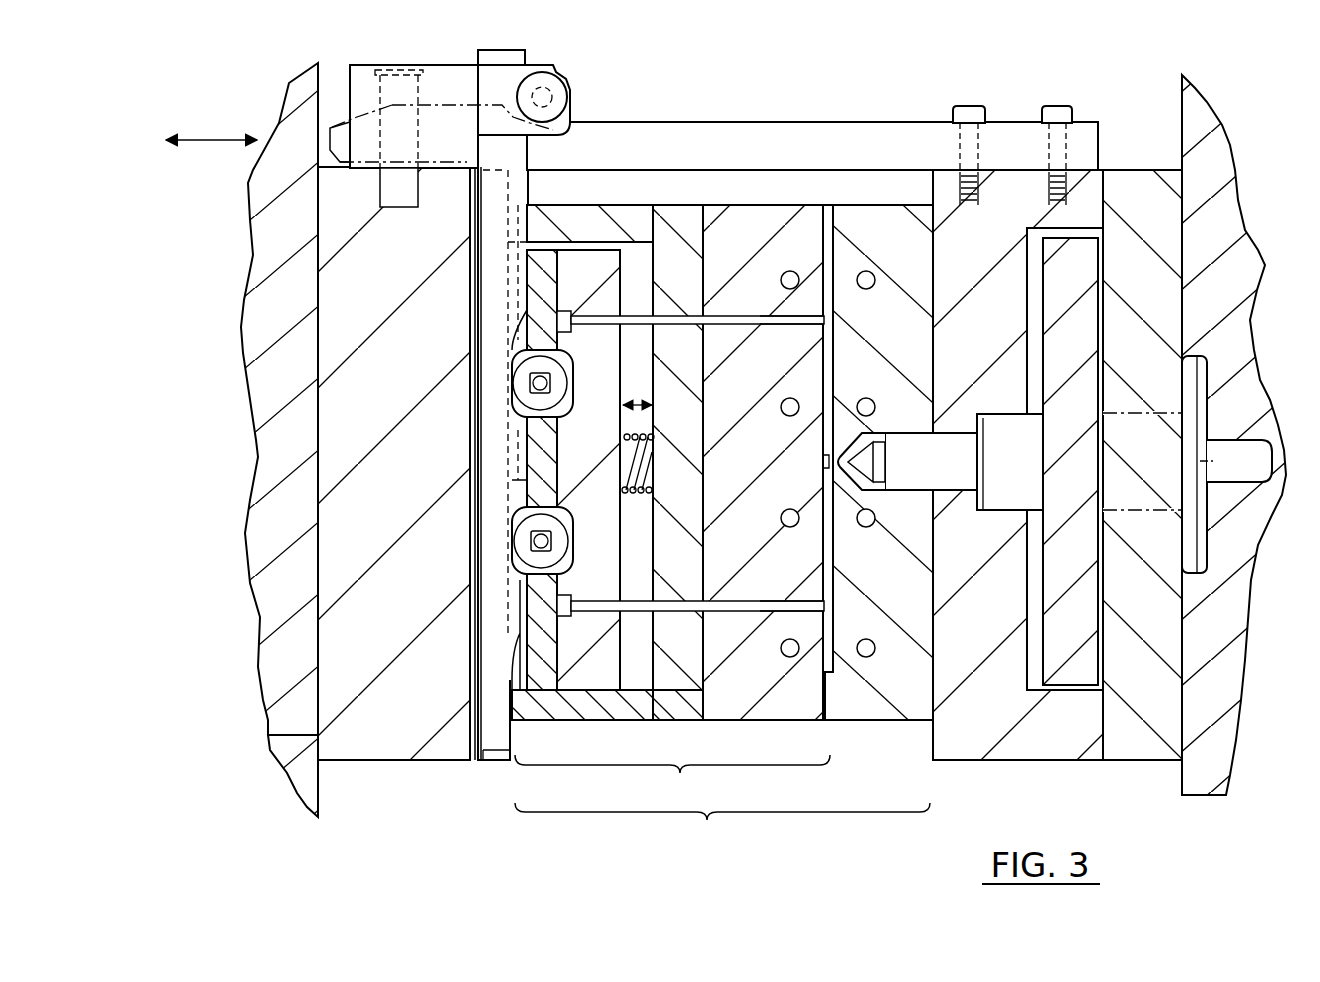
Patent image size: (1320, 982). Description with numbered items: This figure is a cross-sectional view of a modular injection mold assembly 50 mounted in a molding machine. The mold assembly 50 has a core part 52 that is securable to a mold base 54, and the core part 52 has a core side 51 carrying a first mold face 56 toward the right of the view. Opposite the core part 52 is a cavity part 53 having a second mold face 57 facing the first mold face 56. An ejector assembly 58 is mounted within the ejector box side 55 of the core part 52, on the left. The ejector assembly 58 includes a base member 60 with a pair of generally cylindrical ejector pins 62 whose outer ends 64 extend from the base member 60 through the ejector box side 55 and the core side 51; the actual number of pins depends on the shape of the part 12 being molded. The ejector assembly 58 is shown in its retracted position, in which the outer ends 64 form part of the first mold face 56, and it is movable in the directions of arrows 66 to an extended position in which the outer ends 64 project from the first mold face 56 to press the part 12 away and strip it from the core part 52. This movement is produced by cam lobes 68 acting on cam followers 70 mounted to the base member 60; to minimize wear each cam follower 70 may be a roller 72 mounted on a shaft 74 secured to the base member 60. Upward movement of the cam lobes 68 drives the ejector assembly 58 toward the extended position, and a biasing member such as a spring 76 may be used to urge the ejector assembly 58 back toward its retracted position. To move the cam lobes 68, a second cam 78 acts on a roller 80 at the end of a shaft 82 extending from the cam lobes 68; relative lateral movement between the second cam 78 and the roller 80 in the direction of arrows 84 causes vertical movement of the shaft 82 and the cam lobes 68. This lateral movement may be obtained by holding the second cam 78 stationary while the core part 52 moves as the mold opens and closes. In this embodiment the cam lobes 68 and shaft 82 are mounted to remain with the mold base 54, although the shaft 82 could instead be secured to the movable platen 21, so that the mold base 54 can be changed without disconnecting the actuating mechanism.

The part 12 is at (830, 228).
The movable platen 21 is at (305, 790).
The modular injection mold assembly 50 is at (722, 828).
The core side 51 is at (760, 694).
The core part 52 is at (672, 779).
The cavity part 53 is at (878, 690).
The mold base 54 is at (401, 737).
The ejector box side 55 is at (618, 694).
The first mold face 56 is at (822, 256).
The second mold face 57 is at (833, 268).
The ejector assembly 58 is at (630, 268).
The base member 60 is at (600, 250).
The ejector pins 62 is at (606, 320).
The outer ends 64 is at (826, 319).
The arrows 66 is at (640, 402).
The cam lobes 68 is at (520, 449).
The cam followers 70 is at (486, 451).
The roller 72 is at (526, 368).
The shaft 74 is at (531, 391).
The spring 76 is at (645, 494).
The second cam 78 is at (447, 100).
The roller 80 is at (555, 63).
The shaft 82 is at (499, 50).
The arrows 84 is at (208, 143).